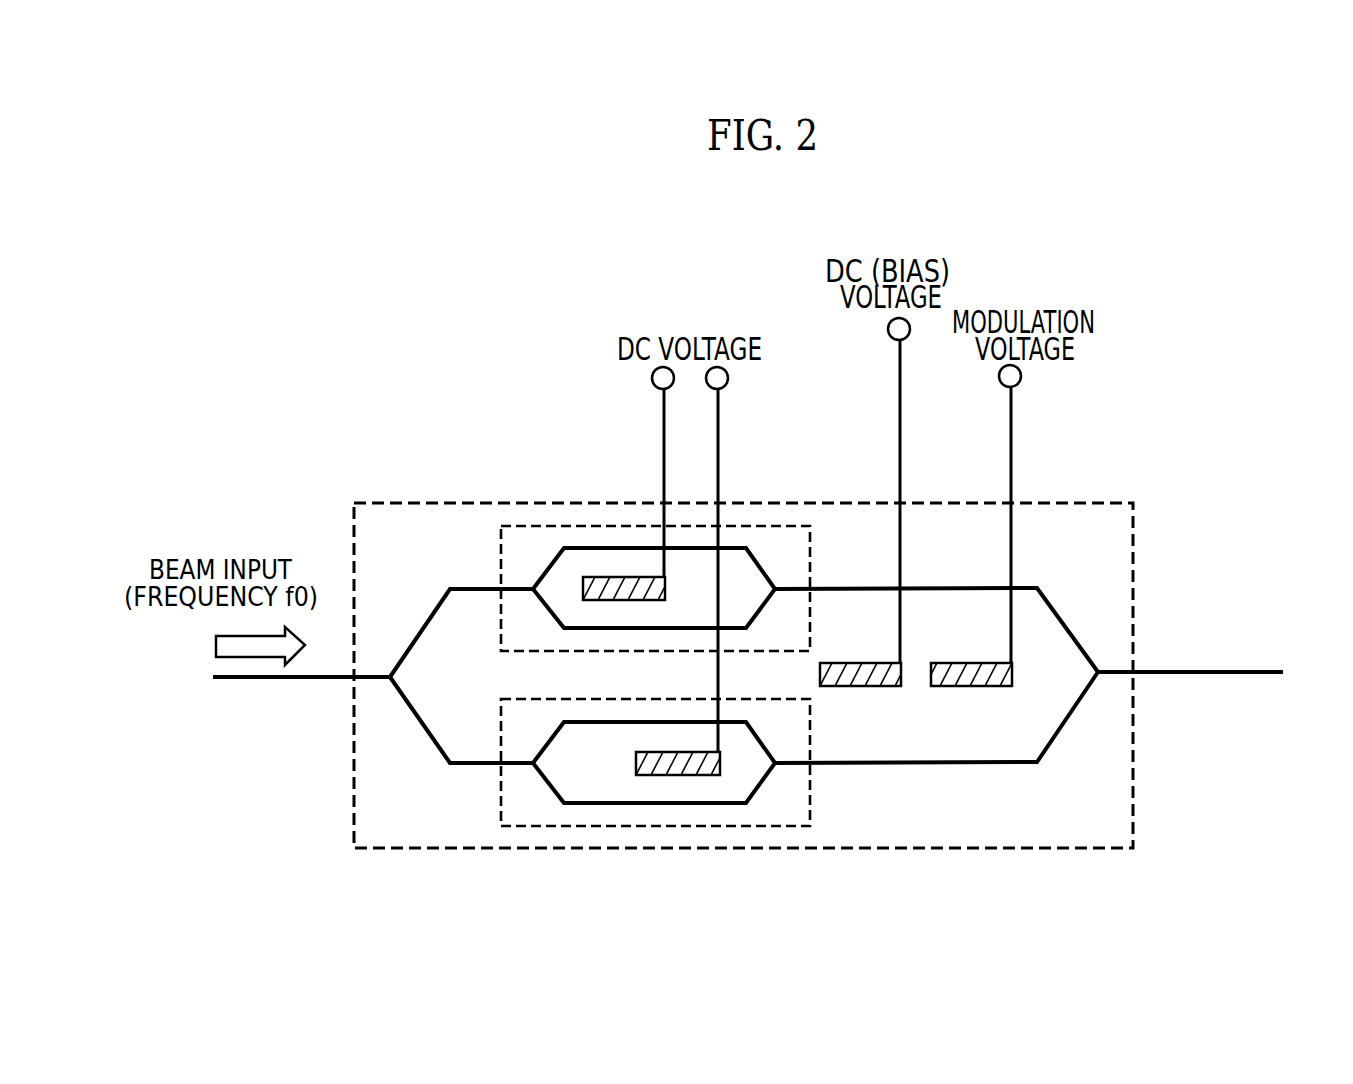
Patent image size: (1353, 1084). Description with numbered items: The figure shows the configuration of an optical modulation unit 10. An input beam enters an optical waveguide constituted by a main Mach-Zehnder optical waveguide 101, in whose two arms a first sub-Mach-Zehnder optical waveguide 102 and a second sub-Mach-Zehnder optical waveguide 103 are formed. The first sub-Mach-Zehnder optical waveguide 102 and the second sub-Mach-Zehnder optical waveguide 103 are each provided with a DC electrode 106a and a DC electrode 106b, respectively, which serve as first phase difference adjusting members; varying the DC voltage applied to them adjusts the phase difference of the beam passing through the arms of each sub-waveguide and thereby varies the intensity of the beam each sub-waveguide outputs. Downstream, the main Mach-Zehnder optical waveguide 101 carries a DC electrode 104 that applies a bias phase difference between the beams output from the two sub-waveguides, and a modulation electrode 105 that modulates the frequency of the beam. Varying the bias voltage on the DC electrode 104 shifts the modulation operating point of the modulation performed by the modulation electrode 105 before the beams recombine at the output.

The optical modulation unit 10 is at (414, 358).
The main Mach-Zehnder optical waveguide 101 is at (1133, 792).
The first sub-Mach-Zehnder optical waveguide 102 is at (501, 552).
The second sub-Mach-Zehnder optical waveguide 103 is at (501, 800).
The DC electrode 104 is at (878, 687).
The modulation electrode 105 is at (990, 687).
The DC electrode 106a is at (612, 577).
The DC electrode 106b is at (677, 775).